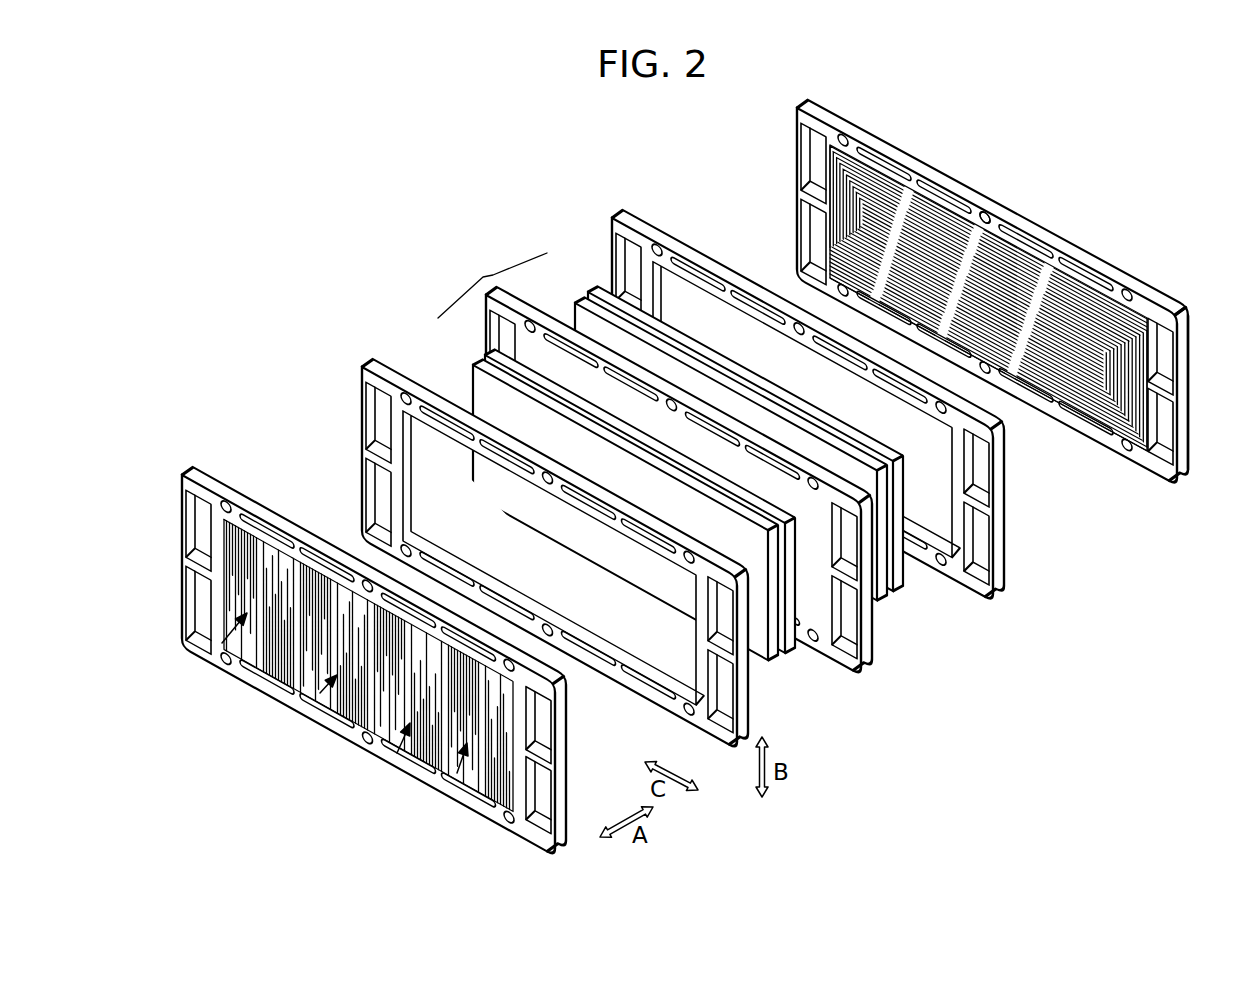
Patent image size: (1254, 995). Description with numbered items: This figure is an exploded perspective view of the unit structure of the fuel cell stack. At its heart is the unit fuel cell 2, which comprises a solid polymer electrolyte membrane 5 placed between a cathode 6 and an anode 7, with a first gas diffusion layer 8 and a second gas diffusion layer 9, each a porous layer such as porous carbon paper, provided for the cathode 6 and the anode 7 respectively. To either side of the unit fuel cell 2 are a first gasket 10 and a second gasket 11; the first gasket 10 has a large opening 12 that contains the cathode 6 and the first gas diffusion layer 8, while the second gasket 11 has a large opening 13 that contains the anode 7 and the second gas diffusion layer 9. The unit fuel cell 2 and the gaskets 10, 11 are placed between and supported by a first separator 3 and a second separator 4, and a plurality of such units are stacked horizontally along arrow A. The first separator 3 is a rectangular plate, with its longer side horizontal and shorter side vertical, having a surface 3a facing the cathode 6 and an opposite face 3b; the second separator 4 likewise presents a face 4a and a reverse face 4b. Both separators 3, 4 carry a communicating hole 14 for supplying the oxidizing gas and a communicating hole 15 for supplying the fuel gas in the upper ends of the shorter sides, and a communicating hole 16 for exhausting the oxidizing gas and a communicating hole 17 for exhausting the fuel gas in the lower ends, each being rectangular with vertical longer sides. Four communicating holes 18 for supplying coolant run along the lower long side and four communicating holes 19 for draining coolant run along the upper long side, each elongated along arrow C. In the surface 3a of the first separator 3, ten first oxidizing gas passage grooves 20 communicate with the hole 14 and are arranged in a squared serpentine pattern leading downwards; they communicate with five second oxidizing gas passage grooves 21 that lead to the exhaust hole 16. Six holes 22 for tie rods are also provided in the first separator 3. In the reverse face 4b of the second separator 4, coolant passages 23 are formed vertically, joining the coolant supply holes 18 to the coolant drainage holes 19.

The unit fuel cell 2 is at (492, 282).
The first separator 3 is at (860, 113).
The rectangular surface 3a is at (1068, 262).
The opposite rectangular face 3b is at (1178, 315).
The second separator 4 is at (218, 462).
The flow channel 4a is at (298, 537).
The reverse face 4b is at (233, 507).
The solid polymer electrolyte membrane 5 is at (880, 627).
The cathode 6 is at (708, 370).
The anode 7 is at (787, 658).
The first gas diffusion layer 8 is at (670, 333).
The second gas diffusion layer 9 is at (767, 655).
The first gasket 10 is at (656, 216).
The second gasket 11 is at (360, 357).
The large opening 12 is at (940, 517).
The large opening 13 is at (692, 715).
The communicating hole for supplying oxidizing gas 14 is at (545, 723).
The communicating hole for supplying fuel gas 15 is at (187, 523).
The communicating hole for exhausting oxidizing gas 16 is at (177, 627).
The communicating hole for exhausting fuel gas 17 is at (545, 790).
The communicating holes for supplying coolant 18 is at (467, 800).
The communicating holes for draining coolant 19 is at (470, 633).
The first oxidizing gas passage grooves 20 is at (1138, 318).
The second oxidizing gas passage grooves 21 is at (1100, 433).
The holes for tie rods 22 is at (365, 742).
The coolant passages 23 is at (450, 788).